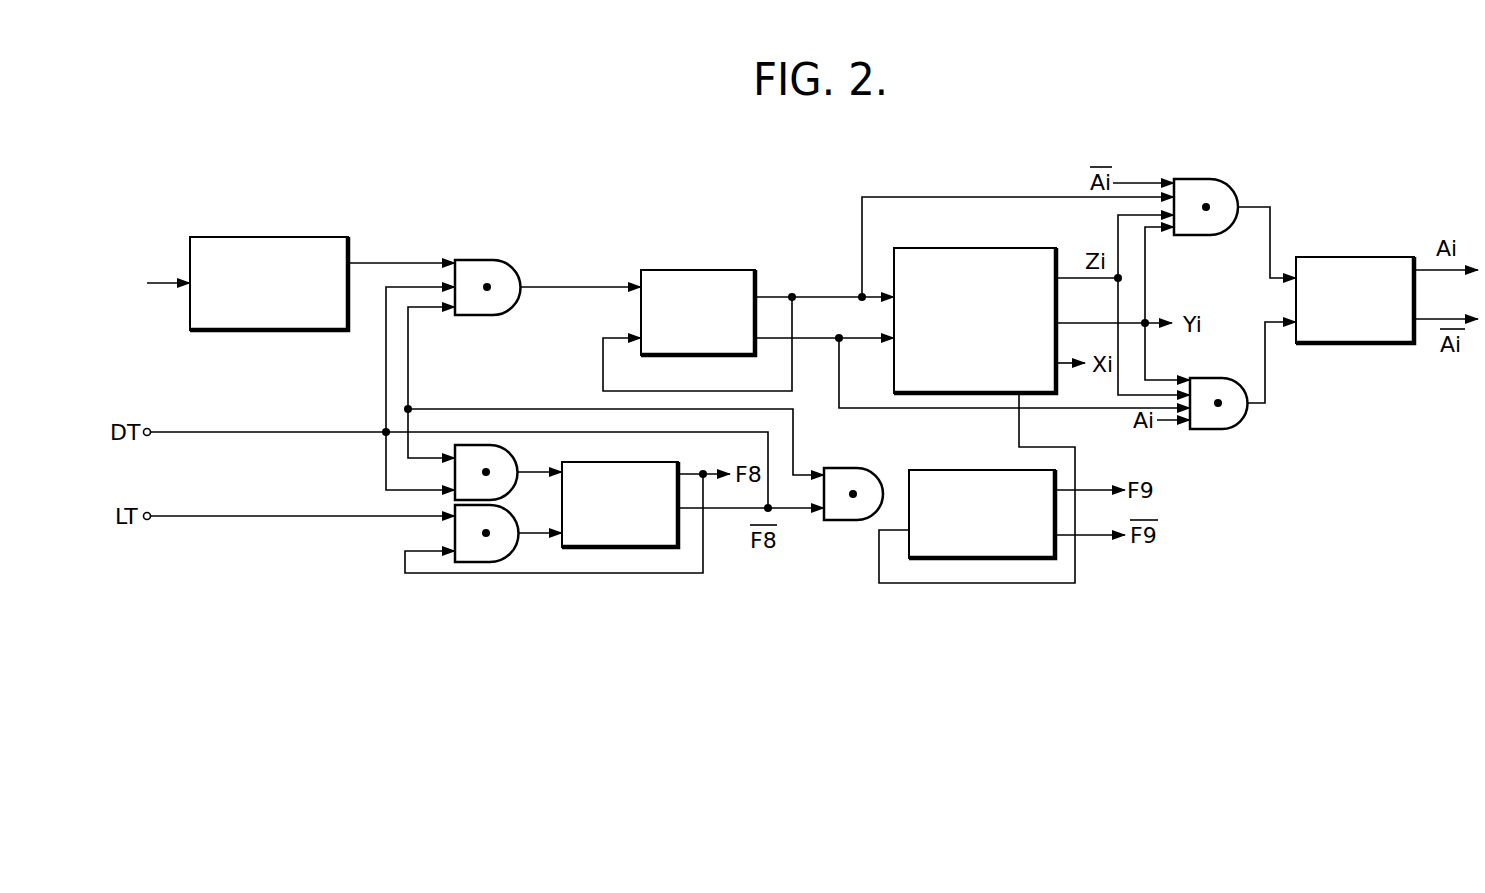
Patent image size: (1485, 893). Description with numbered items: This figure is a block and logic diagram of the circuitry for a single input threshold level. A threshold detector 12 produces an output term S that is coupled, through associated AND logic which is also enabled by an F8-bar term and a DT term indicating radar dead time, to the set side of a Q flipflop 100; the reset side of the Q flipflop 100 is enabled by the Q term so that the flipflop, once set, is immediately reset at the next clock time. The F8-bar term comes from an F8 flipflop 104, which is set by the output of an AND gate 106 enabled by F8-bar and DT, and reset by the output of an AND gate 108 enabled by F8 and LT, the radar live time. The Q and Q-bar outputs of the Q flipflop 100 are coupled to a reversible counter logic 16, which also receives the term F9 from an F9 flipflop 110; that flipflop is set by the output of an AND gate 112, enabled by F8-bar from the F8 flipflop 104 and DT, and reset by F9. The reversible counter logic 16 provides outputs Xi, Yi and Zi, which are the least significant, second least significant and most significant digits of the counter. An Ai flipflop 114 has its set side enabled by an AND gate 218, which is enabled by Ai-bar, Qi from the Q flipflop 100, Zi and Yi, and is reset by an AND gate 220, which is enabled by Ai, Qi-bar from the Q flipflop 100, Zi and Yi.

The threshold detector 12 is at (346, 237).
The Q flipflop 100 is at (758, 261).
The reversible counter logic 16 is at (1056, 248).
The AND gate 218 is at (1238, 170).
The AND gate 220 is at (1236, 378).
The Ai flipflop 114 is at (1410, 257).
The AND gate 106 is at (514, 455).
The AND gate 108 is at (513, 553).
The F8 flipflop 104 is at (680, 451).
The AND gate 112 is at (870, 468).
The F9 flipflop 110 is at (1007, 466).